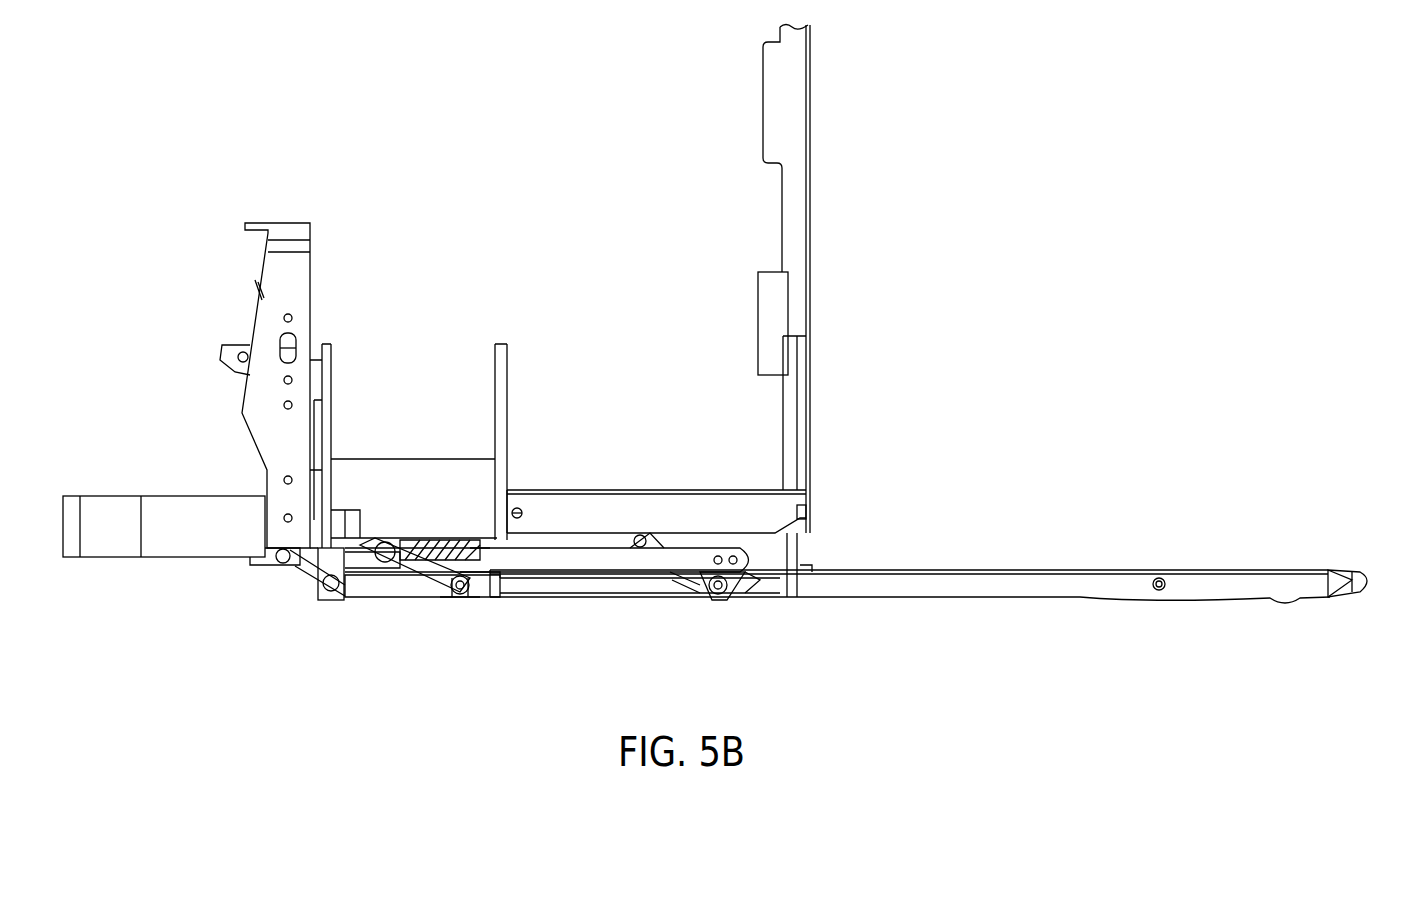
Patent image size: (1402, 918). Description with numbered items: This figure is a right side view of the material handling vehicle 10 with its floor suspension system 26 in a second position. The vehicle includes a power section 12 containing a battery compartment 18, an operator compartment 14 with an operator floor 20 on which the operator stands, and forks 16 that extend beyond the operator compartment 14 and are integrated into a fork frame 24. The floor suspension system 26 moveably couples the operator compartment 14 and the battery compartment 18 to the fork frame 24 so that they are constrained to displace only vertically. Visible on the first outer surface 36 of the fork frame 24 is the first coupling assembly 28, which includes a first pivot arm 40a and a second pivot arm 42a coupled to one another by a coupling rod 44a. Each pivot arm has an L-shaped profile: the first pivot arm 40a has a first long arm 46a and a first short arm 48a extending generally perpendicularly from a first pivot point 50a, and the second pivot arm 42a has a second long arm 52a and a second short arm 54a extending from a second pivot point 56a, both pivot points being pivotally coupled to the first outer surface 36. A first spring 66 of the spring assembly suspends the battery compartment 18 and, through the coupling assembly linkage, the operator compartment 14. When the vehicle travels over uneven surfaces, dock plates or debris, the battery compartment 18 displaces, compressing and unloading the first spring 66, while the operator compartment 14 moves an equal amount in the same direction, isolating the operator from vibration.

The material handling vehicle 10 is at (505, 272).
The power section 12 is at (255, 185).
The operator compartment 14 is at (638, 465).
The forks 16 is at (890, 568).
The battery compartment 18 is at (390, 443).
The operator floor 20 is at (571, 488).
The fork frame 24 is at (447, 600).
The floor suspension system 26 is at (740, 600).
The first coupling assembly 28 is at (630, 590).
The first outer surface 36 is at (598, 590).
The first pivot arm 40a is at (440, 575).
The second pivot arm 42a is at (692, 590).
The coupling rod 44a is at (598, 560).
The first long arm 46a is at (415, 553).
The first short arm 48a is at (483, 590).
The first pivot point 50a is at (470, 595).
The second long arm 52a is at (690, 585).
The second short arm 54a is at (735, 595).
The second pivot point 56a is at (722, 592).
The first spring 66 is at (445, 540).